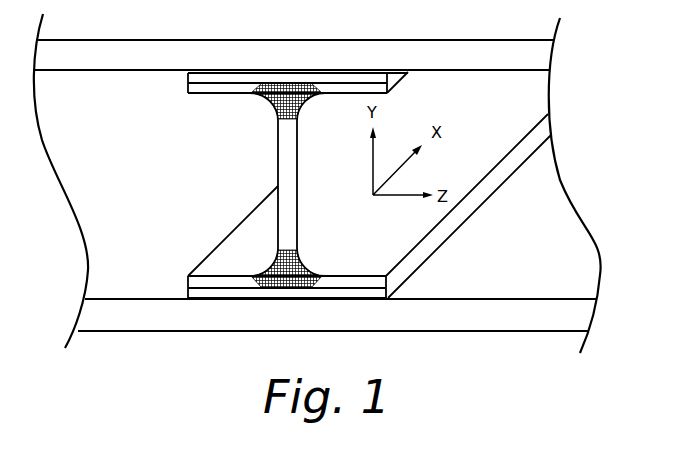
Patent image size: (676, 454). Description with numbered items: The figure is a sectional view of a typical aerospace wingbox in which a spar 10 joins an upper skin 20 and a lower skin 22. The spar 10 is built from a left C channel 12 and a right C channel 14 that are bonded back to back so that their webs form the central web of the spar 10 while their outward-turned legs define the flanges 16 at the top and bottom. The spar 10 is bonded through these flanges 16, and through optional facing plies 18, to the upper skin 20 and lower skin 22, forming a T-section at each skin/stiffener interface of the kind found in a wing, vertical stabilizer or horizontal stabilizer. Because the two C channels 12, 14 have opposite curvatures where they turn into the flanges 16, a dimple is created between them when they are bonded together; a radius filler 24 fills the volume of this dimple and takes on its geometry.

The spar 10 is at (376, 247).
The left C channel 12 is at (200, 94).
The right C channel 14 is at (453, 233).
The flanges 16 is at (352, 73).
The facing plies 18 is at (188, 75).
The upper skin 20 is at (545, 56).
The lower skin 22 is at (532, 312).
The radius filler 24 is at (276, 266).